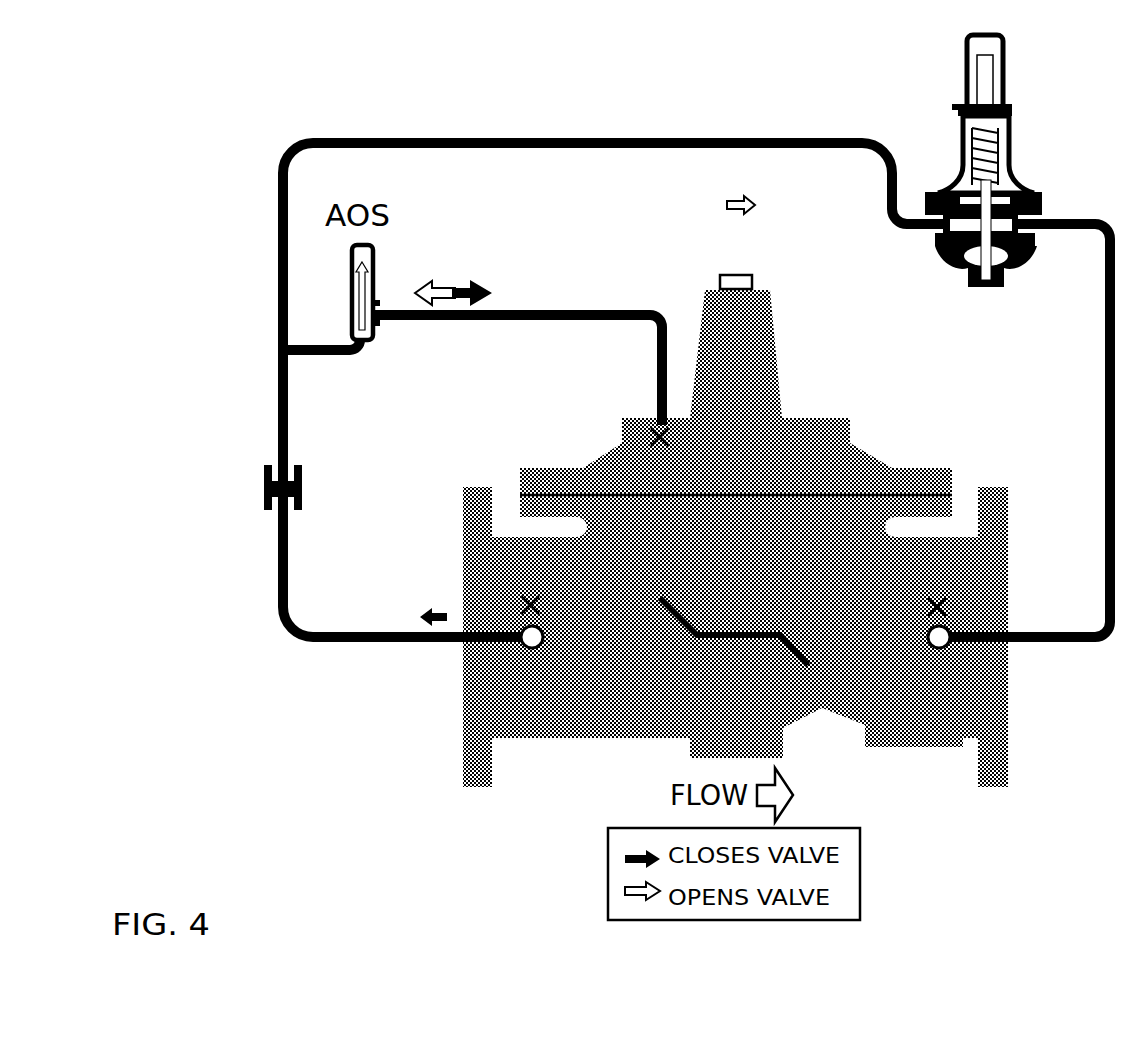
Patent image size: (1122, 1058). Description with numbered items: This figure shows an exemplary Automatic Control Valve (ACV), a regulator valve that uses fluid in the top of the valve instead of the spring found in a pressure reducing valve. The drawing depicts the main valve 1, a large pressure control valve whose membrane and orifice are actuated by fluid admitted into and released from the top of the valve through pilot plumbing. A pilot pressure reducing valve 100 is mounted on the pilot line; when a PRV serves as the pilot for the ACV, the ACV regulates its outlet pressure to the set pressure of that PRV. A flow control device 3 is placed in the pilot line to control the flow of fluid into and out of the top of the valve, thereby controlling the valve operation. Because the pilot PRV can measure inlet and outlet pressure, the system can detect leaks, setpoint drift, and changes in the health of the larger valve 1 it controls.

The pilot valve 100 is at (940, 77).
The flow control valve 3 is at (295, 477).
The main valve 1 is at (735, 514).